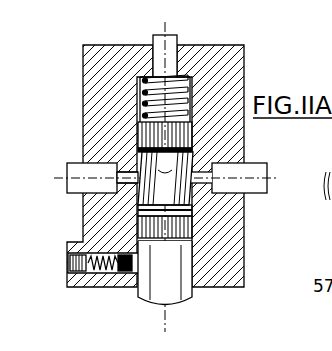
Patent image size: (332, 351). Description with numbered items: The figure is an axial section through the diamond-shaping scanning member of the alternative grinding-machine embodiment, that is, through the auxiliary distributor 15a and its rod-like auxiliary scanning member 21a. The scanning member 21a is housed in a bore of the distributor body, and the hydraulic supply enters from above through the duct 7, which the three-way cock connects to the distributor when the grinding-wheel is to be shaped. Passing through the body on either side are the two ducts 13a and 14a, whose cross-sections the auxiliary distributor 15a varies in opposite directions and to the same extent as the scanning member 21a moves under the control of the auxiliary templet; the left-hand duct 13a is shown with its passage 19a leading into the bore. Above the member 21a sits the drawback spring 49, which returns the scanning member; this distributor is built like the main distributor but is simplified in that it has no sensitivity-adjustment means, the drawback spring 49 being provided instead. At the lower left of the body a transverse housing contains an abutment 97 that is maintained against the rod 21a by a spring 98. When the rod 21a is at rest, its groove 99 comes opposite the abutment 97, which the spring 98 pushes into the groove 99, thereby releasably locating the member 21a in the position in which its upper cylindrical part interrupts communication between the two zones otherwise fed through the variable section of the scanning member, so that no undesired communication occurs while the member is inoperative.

The duct 7 is at (166, 177).
The drawback spring 49 is at (136, 103).
The duct 13a is at (72, 163).
The inlet passage 19a is at (97, 178).
The duct 14a is at (266, 164).
The auxiliary distributor 15a is at (241, 214).
The groove 99 is at (133, 222).
The spring 98 is at (84, 284).
The abutment 97 is at (120, 286).
The auxiliary scanning member 21a is at (196, 300).